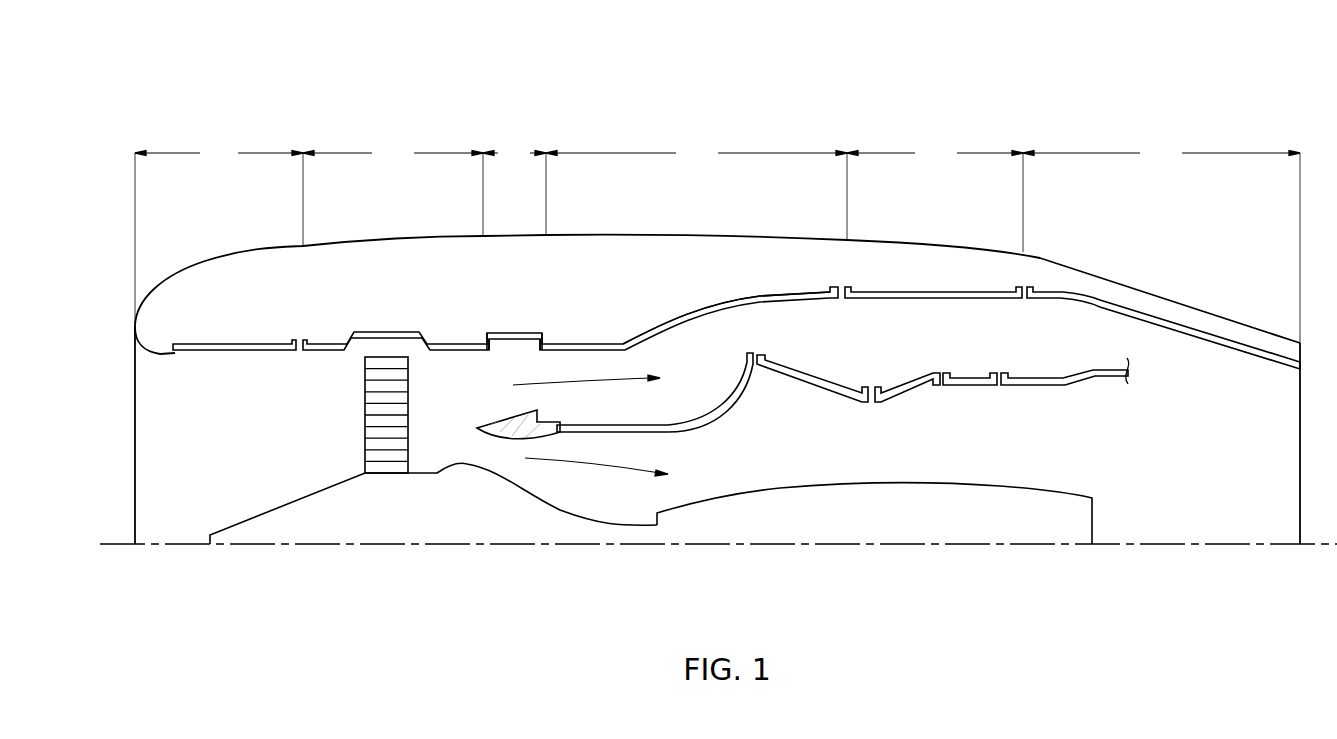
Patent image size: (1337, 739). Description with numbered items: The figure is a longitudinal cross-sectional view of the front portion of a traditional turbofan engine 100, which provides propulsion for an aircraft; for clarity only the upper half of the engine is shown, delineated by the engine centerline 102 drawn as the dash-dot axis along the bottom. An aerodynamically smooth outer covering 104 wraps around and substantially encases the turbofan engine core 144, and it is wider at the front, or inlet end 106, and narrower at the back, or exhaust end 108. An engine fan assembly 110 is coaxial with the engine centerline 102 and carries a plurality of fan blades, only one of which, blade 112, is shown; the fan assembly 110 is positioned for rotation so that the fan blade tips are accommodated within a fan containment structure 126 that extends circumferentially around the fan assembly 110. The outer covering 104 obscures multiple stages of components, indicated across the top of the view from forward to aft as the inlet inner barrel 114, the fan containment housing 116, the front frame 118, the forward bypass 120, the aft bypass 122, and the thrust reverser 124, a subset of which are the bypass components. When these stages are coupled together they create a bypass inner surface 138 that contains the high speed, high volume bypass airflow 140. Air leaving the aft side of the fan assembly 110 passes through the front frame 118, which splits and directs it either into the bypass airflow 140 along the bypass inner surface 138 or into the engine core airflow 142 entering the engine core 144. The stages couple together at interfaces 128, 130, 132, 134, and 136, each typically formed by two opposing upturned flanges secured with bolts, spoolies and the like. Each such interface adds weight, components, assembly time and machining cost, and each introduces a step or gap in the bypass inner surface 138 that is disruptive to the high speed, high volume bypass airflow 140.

The turbofan engine 100 is at (292, 89).
The engine centerline 102 is at (165, 544).
The outer covering 104 is at (672, 260).
The inlet end 106 is at (160, 438).
The exhaust end 108 is at (1215, 460).
The engine fan assembly 110 is at (433, 503).
The fan blade 112 is at (365, 414).
The inlet inner barrel 114 is at (219, 234).
The fan containment housing 116 is at (393, 188).
The front frame 118 is at (500, 425).
The forward bypass 120 is at (696, 190).
The aft bypass 122 is at (935, 196).
The thrust reverser 124 is at (1161, 242).
The fan containment structure 126 is at (388, 332).
The interface 128 is at (296, 340).
The interface 130 is at (487, 336).
The interface 132 is at (543, 334).
The interface 134 is at (838, 288).
The interface 136 is at (1022, 290).
The bypass inner surface 138 is at (713, 310).
The bypass airflow 140 is at (600, 384).
The engine core airflow 142 is at (583, 470).
The turbofan engine core 144 is at (897, 483).